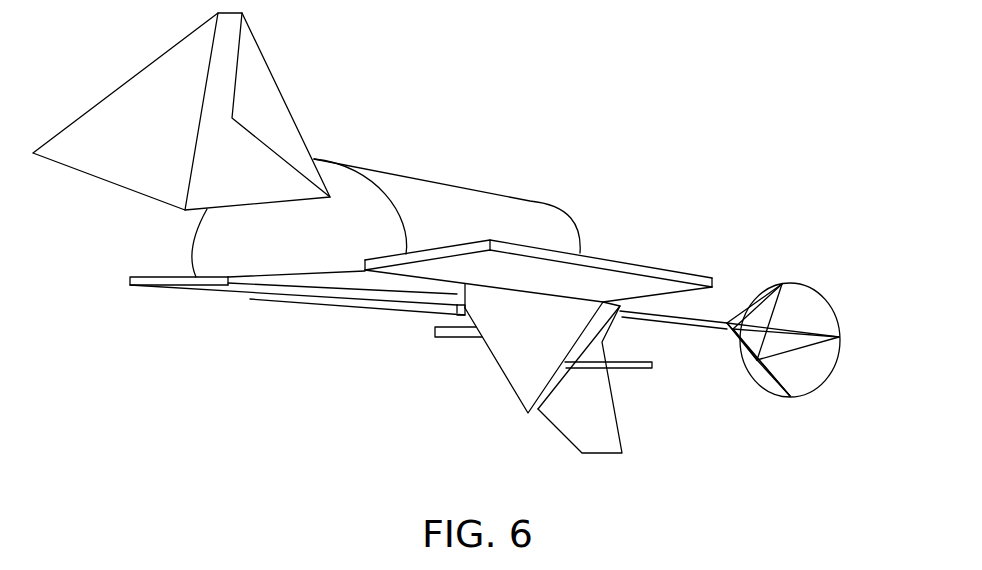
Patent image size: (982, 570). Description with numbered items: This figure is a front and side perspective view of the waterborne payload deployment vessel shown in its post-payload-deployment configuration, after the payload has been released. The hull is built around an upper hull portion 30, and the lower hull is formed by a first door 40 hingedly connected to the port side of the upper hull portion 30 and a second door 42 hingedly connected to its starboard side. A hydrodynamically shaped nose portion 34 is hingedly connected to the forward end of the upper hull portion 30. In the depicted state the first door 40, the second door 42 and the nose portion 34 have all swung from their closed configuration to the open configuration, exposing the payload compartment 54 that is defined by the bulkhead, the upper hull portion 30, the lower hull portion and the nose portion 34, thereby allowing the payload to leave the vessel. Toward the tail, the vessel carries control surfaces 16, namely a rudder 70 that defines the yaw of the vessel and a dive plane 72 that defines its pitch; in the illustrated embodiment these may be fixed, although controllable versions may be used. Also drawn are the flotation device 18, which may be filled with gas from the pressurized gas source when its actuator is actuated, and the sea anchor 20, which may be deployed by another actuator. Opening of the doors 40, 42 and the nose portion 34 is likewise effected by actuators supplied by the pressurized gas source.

The control surfaces 16 is at (436, 264).
The flotation device 18 is at (422, 178).
The sea anchor 20 is at (797, 283).
The upper hull portion 30 is at (268, 255).
The nose portion 34 is at (278, 90).
The first door 40 is at (648, 264).
The second door 42 is at (164, 290).
The payload compartment 54 is at (328, 297).
The rudder 70 is at (598, 455).
The dive plane 72 is at (640, 369).